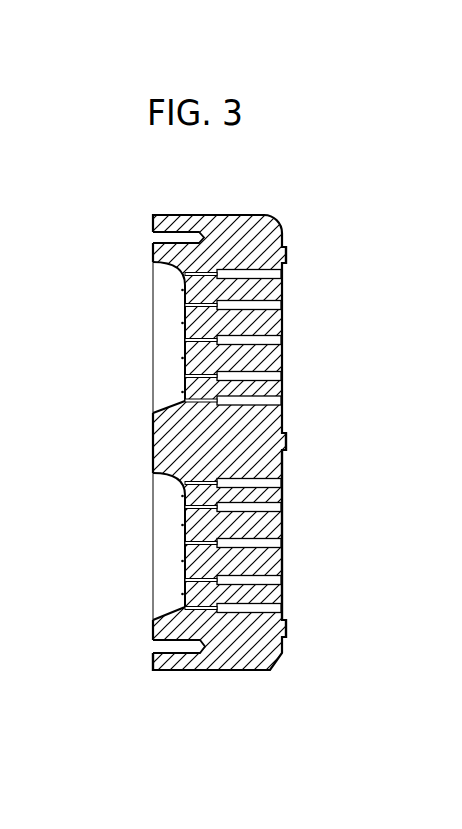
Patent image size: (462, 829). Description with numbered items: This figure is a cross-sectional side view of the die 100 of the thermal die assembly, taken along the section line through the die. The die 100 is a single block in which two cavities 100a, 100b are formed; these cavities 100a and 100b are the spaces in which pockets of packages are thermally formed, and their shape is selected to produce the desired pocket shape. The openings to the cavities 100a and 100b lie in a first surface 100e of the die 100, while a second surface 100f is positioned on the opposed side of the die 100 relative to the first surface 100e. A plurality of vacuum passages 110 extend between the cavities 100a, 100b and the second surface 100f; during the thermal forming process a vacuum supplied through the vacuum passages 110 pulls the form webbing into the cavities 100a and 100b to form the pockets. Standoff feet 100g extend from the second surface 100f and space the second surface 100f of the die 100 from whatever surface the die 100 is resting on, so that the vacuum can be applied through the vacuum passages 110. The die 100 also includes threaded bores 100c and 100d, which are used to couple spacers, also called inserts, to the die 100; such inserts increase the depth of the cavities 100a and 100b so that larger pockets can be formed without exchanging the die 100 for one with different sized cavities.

The die 100 is at (268, 214).
The cavity 100a is at (170, 298).
The cavity 100b is at (163, 602).
The threaded bore 100c is at (185, 237).
The threaded bore 100d is at (190, 643).
The first surface 100e is at (153, 661).
The second surface 100f is at (281, 563).
The standoff feet 100g is at (285, 253).
The vacuum passages 110 is at (203, 272).